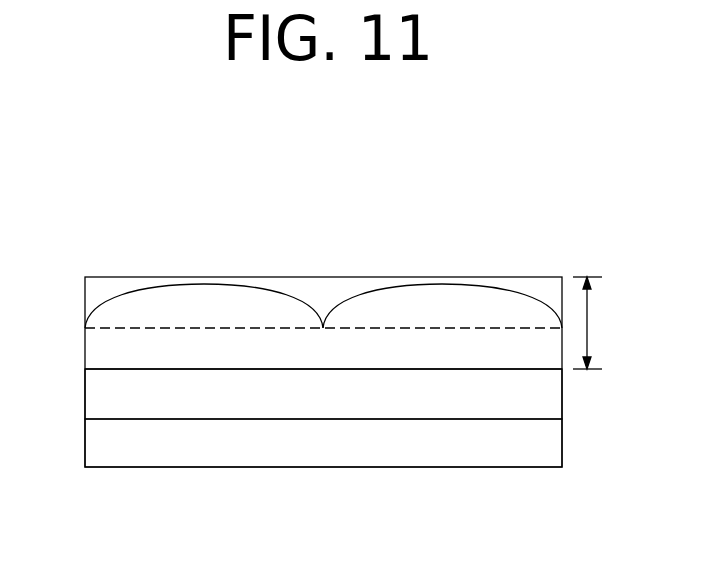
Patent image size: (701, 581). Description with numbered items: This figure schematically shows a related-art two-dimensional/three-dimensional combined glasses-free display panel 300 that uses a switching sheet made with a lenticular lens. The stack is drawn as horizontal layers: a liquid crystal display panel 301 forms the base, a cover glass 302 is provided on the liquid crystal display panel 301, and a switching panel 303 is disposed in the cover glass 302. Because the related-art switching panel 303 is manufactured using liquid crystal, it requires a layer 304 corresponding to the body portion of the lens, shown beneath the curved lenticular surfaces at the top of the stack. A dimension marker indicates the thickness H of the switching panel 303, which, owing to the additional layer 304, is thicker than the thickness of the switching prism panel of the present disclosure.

The 2D/3D combined glasses-free 3D display panel 300 is at (338, 171).
The liquid crystal display panel 301 is at (562, 441).
The cover glass 302 is at (562, 393).
The 2D/3D switching panel 303 is at (75, 280).
The layer 304 is at (91, 354).
The thickness H is at (594, 323).